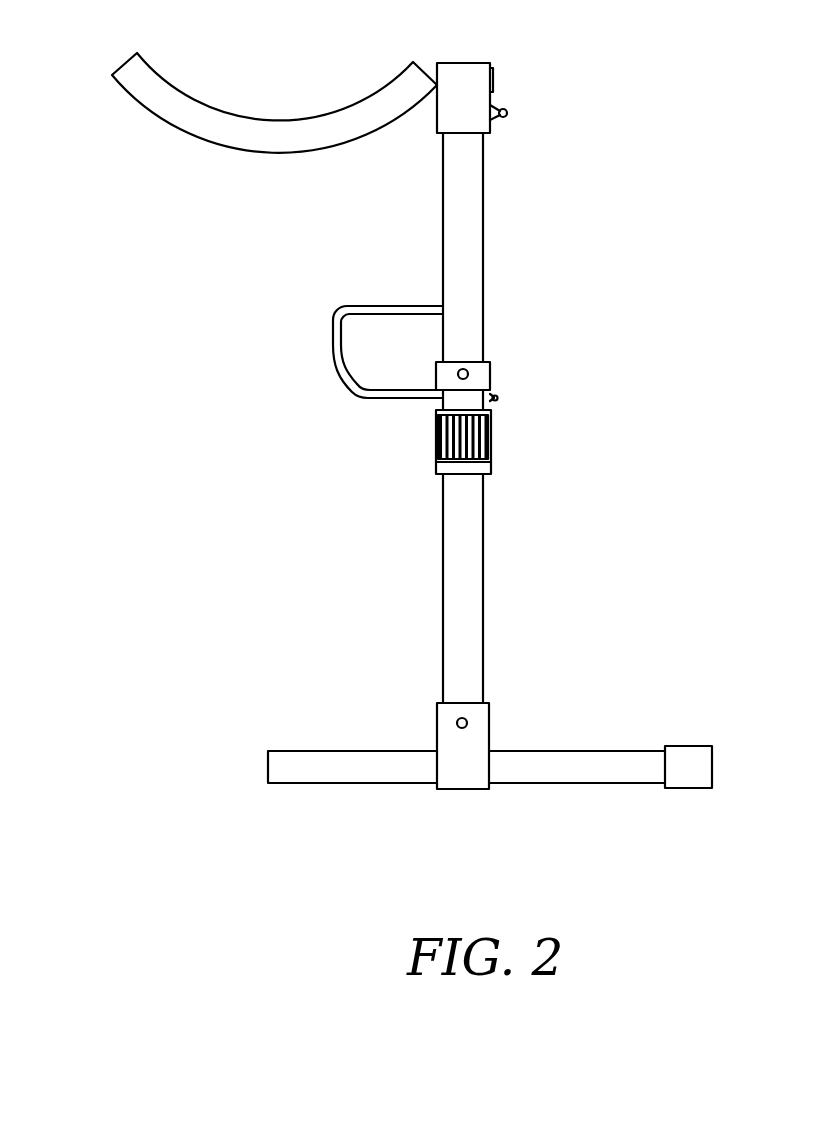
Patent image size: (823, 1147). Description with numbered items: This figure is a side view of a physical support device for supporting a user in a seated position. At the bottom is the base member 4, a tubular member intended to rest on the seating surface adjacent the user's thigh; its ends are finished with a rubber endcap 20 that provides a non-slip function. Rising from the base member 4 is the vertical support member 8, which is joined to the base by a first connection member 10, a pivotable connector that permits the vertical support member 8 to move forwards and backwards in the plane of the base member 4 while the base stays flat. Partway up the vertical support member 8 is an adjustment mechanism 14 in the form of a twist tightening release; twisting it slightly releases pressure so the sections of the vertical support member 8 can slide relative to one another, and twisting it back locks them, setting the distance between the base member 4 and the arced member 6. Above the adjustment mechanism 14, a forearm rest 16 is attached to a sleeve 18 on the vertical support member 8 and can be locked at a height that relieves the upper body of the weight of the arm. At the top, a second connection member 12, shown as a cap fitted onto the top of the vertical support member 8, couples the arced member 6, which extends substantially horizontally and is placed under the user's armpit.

The base member 4 is at (352, 784).
The arced member 6 is at (273, 120).
The vertical support member 8 is at (483, 236).
The first connection member 10 is at (460, 790).
The second connection member 12 is at (462, 78).
The adjustment mechanism 14 is at (490, 450).
The forearm rest 16 is at (342, 370).
The sleeve 18 is at (492, 375).
The rubber endcap 20 is at (683, 790).